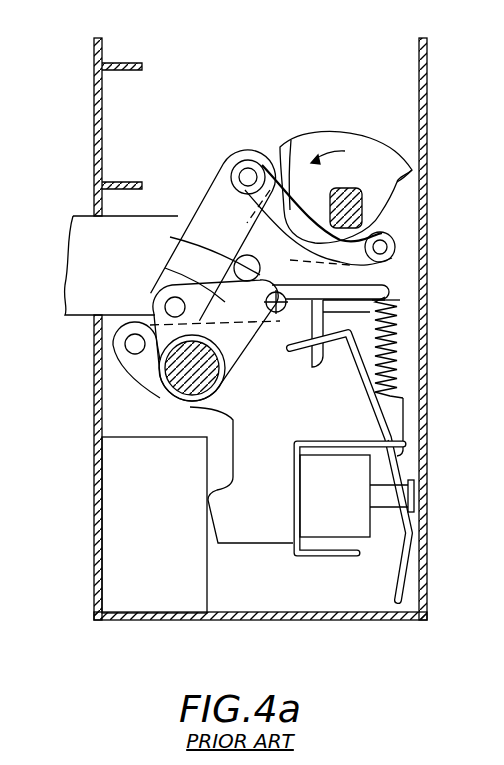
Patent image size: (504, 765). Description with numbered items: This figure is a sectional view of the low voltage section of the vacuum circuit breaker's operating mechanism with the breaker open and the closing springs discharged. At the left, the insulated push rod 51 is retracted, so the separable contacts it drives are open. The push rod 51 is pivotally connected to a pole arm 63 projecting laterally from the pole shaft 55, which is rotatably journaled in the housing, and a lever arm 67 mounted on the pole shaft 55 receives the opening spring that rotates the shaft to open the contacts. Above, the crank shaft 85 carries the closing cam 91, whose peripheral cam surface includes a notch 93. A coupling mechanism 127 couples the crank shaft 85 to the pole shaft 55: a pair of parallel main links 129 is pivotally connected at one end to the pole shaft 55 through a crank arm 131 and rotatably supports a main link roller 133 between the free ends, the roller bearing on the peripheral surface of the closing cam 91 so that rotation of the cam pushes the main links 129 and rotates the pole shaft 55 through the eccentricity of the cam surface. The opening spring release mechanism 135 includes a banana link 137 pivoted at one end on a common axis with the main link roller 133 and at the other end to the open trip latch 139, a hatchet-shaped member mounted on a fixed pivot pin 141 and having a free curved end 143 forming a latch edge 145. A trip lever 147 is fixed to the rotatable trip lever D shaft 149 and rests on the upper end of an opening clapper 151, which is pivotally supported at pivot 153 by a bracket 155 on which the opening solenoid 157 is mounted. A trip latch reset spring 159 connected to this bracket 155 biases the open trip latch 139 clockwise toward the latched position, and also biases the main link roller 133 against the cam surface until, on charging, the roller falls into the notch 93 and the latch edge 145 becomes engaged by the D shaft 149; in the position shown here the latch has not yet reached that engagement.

The insulated push rod 51 is at (92, 220).
The pole shaft 55 is at (190, 402).
The pole arm 63 is at (180, 268).
The lever arm 67 is at (138, 383).
The crank shaft 85 is at (375, 240).
The closing cam 91 is at (379, 137).
The notch 93 is at (399, 184).
The coupling mechanism 127 is at (249, 122).
The main links 129 is at (205, 207).
The crank arm 131 is at (155, 315).
The main link roller 133 is at (240, 150).
The opening spring release mechanism 135 is at (402, 308).
The banana link 137 is at (291, 140).
The open trip latch 139 is at (395, 283).
The fixed pivot pin 141 is at (330, 352).
The free curved end 143 is at (272, 332).
The latch edge 145 is at (305, 372).
The trip lever 147 is at (400, 300).
The trip lever D shaft 149 is at (186, 241).
The opening clapper 151 is at (400, 433).
The clapper pivot 153 is at (395, 448).
The bracket 155 is at (323, 560).
The opening solenoid 157 is at (365, 524).
The trip latch reset spring 159 is at (398, 348).